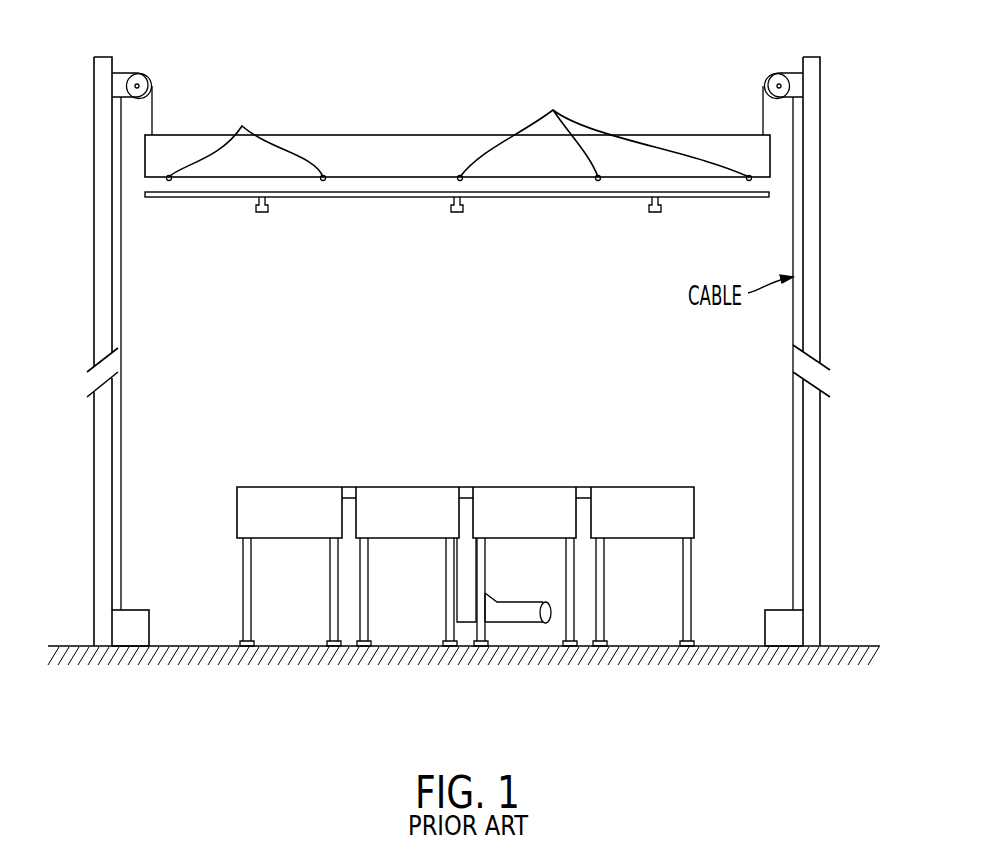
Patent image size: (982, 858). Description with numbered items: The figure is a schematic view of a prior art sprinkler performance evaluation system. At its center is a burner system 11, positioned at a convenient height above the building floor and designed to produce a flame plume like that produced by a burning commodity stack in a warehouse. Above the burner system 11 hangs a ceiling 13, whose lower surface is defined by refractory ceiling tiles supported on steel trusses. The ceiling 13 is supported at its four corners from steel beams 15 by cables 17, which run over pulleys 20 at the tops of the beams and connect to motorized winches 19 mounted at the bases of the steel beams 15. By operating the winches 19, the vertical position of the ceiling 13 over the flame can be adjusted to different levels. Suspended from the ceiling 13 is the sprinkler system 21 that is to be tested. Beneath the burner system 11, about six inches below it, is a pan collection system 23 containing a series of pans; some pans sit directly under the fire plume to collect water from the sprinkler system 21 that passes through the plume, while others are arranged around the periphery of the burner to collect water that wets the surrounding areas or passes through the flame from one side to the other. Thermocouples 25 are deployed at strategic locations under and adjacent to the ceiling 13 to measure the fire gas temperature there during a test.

The burner system 11 is at (413, 472).
The ceiling 13 is at (419, 152).
The steel beams 15 is at (101, 157).
The cables 17 is at (153, 113).
The motorized winches 19 is at (130, 625).
The pulleys 20 is at (146, 80).
The sprinkler system 21 is at (455, 219).
The pan collection system 23 is at (613, 485).
The thermocouples 25 is at (242, 127).